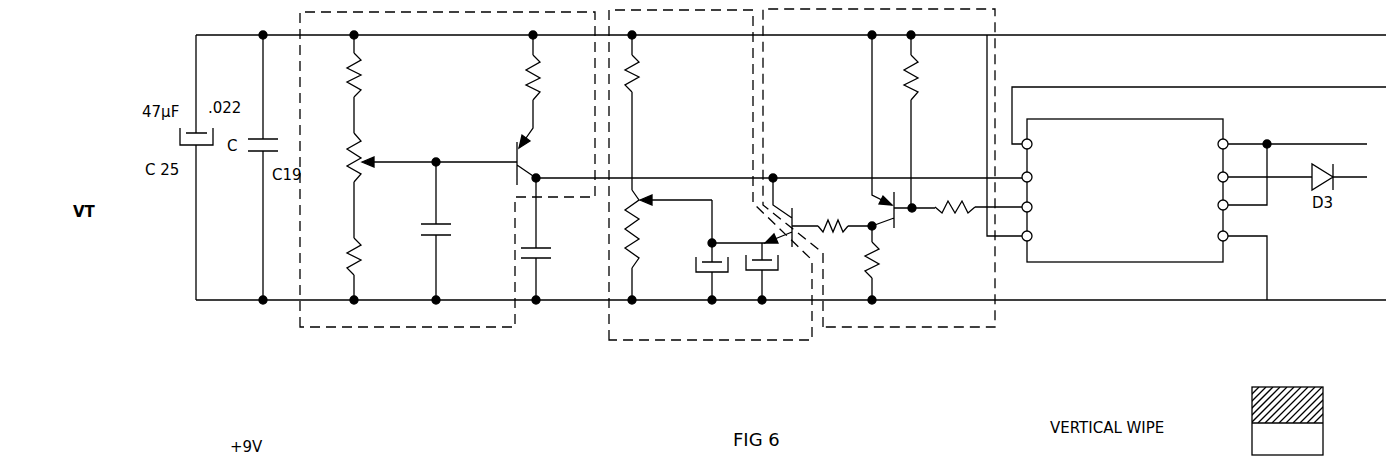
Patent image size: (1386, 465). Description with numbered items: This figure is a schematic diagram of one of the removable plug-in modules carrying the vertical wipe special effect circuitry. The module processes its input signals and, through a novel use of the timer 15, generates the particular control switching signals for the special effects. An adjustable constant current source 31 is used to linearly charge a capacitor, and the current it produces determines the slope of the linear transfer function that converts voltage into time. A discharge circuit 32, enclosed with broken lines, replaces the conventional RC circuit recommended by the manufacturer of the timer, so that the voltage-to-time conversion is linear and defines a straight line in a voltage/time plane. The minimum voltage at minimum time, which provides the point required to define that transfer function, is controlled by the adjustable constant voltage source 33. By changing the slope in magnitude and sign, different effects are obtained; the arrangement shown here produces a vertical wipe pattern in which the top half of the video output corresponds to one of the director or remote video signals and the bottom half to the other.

The adjustable constant current source 31 is at (438, 327).
The adjustable constant voltage source 33 is at (745, 340).
The discharge circuit 32 is at (942, 327).
The timer 555 15 is at (1150, 262).